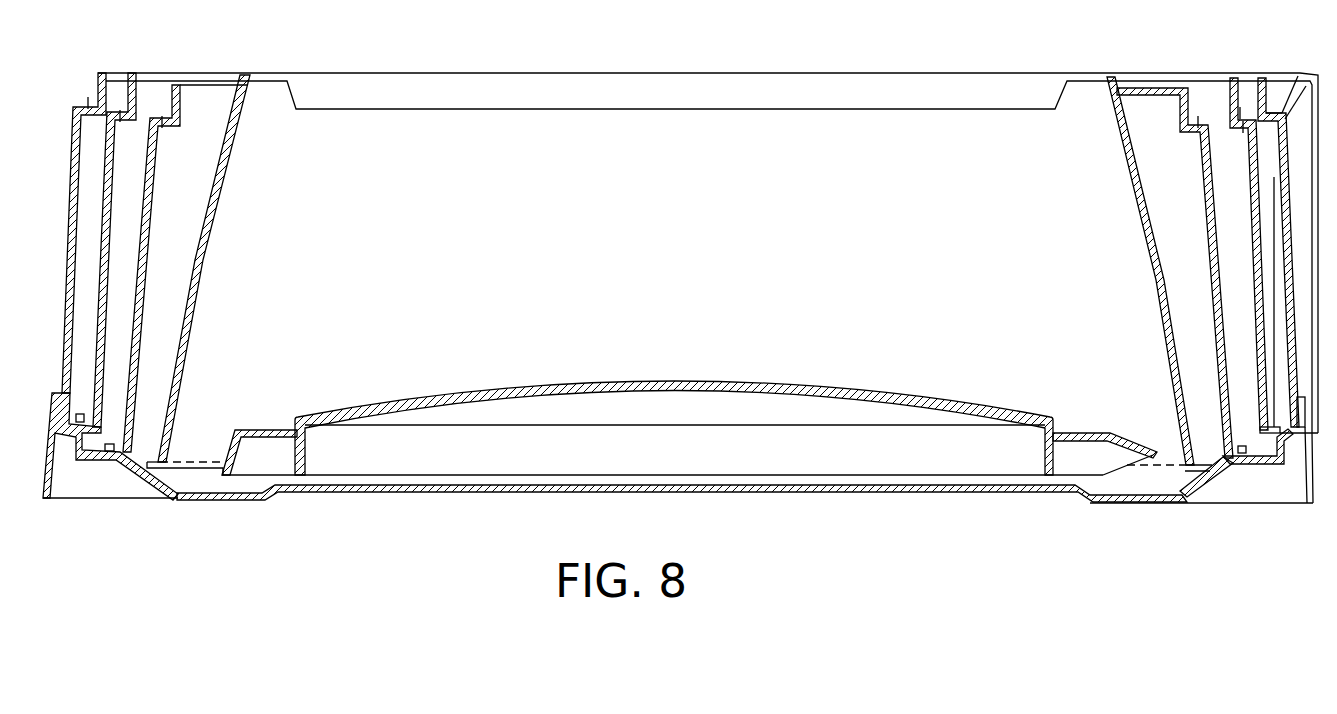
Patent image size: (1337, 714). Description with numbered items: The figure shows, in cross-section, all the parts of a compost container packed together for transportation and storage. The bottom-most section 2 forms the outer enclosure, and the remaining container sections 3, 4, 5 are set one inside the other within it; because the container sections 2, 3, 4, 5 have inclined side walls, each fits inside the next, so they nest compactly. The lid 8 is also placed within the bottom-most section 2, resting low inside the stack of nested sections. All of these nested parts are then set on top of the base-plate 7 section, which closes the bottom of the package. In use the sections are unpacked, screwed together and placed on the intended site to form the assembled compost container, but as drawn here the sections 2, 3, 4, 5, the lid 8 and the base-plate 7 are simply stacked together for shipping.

The bottom-most section 2 is at (72, 137).
The container section 3 is at (103, 216).
The container section 4 is at (144, 198).
The container section 5 is at (213, 196).
The base-plate section 7 is at (230, 499).
The lid 8 is at (783, 385).